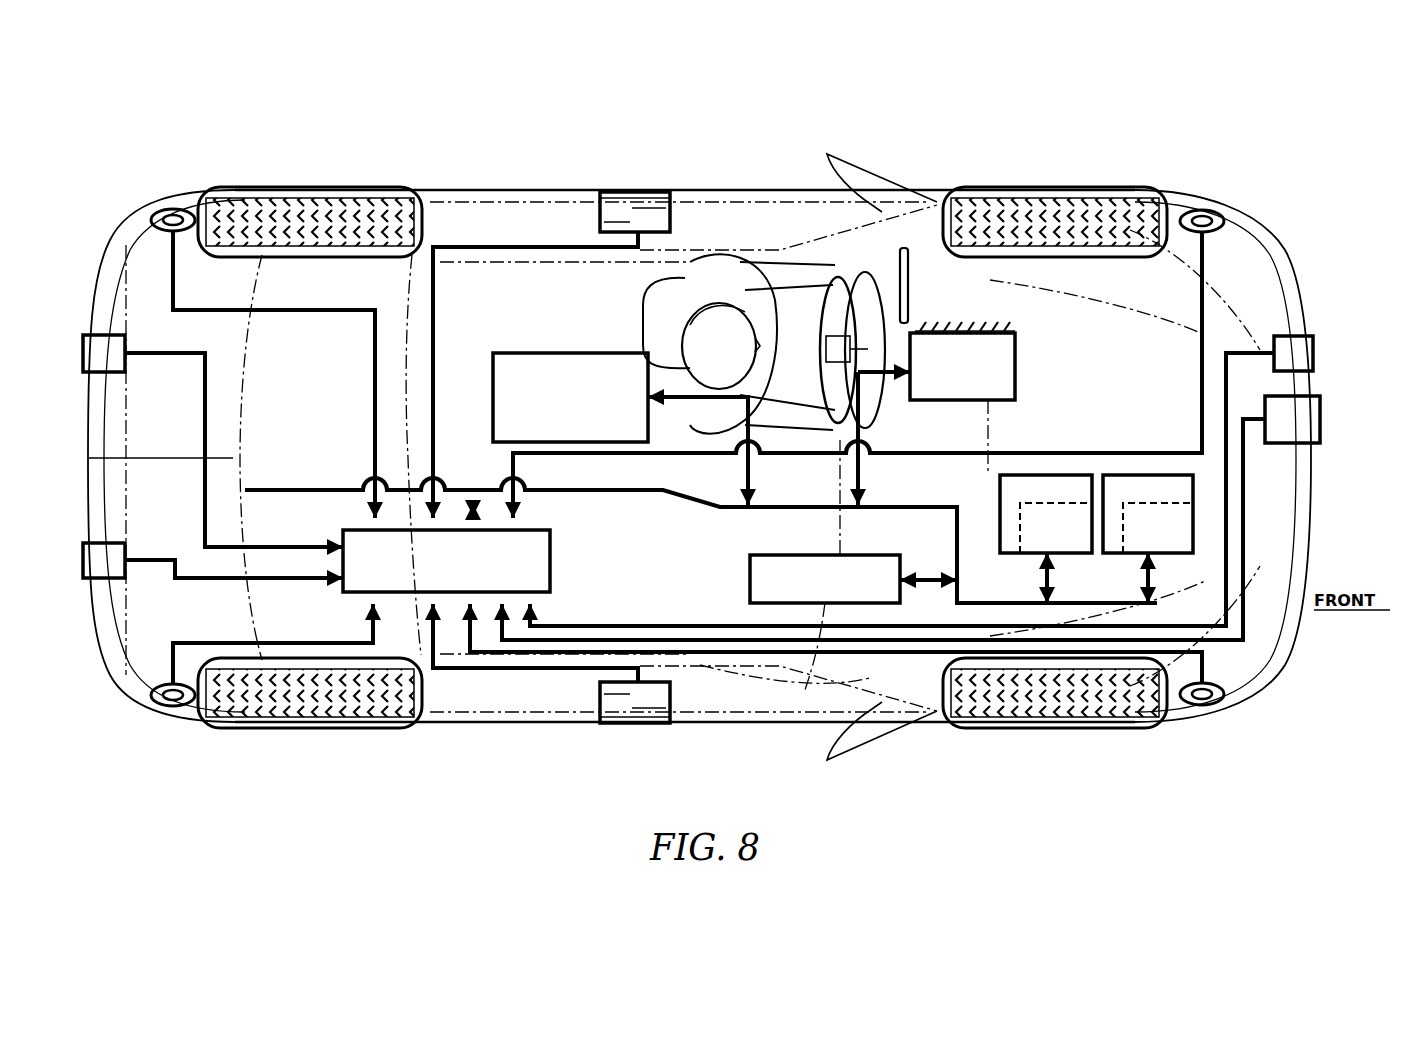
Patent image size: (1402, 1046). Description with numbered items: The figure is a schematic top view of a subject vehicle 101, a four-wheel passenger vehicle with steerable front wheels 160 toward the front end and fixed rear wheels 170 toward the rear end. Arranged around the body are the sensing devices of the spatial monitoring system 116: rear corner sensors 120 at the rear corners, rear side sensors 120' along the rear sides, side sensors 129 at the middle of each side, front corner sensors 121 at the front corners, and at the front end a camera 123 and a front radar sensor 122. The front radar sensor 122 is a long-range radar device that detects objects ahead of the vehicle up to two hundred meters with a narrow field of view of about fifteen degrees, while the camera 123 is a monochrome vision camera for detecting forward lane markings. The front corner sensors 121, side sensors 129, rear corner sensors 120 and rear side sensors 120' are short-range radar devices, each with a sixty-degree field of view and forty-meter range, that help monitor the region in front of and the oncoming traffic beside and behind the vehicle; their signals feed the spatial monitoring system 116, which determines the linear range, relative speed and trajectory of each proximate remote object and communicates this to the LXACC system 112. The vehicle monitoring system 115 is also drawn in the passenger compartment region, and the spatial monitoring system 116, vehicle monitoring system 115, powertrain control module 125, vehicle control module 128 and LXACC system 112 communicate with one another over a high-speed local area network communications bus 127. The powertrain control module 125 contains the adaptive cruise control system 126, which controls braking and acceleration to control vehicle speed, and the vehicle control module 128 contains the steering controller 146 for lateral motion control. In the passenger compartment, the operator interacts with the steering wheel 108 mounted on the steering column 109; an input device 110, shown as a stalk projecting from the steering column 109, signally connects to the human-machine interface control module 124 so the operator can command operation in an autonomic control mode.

The subject vehicle 101 is at (1040, 168).
The steering wheel 108 is at (895, 408).
The steering column 109 is at (942, 322).
The input device 110 is at (907, 287).
The LXACC system 112 is at (853, 579).
The vehicle monitoring system 115 is at (570, 397).
The spatial monitoring system 116 is at (446, 561).
The rear corner sensors 120 is at (241, 456).
The rear side sensors 120' is at (190, 463).
The front corner sensors 121 is at (1210, 212).
The front radar sensor 122 is at (1318, 418).
The camera 123 is at (1300, 355).
The human-machine interface (HMI) control module 124 is at (1012, 360).
The powertrain control module (PCM) 125 is at (1046, 539).
The adaptive cruise control system (ACC) 126 is at (1056, 528).
The high-speed local area network communications bus 127 is at (597, 492).
The vehicle control module (VCM) 128 is at (1148, 539).
The side sensors 129 is at (615, 195).
The steering controller (STRG) 146 is at (1158, 528).
The front wheels 160 is at (1107, 195).
The rear wheels 170 is at (233, 190).